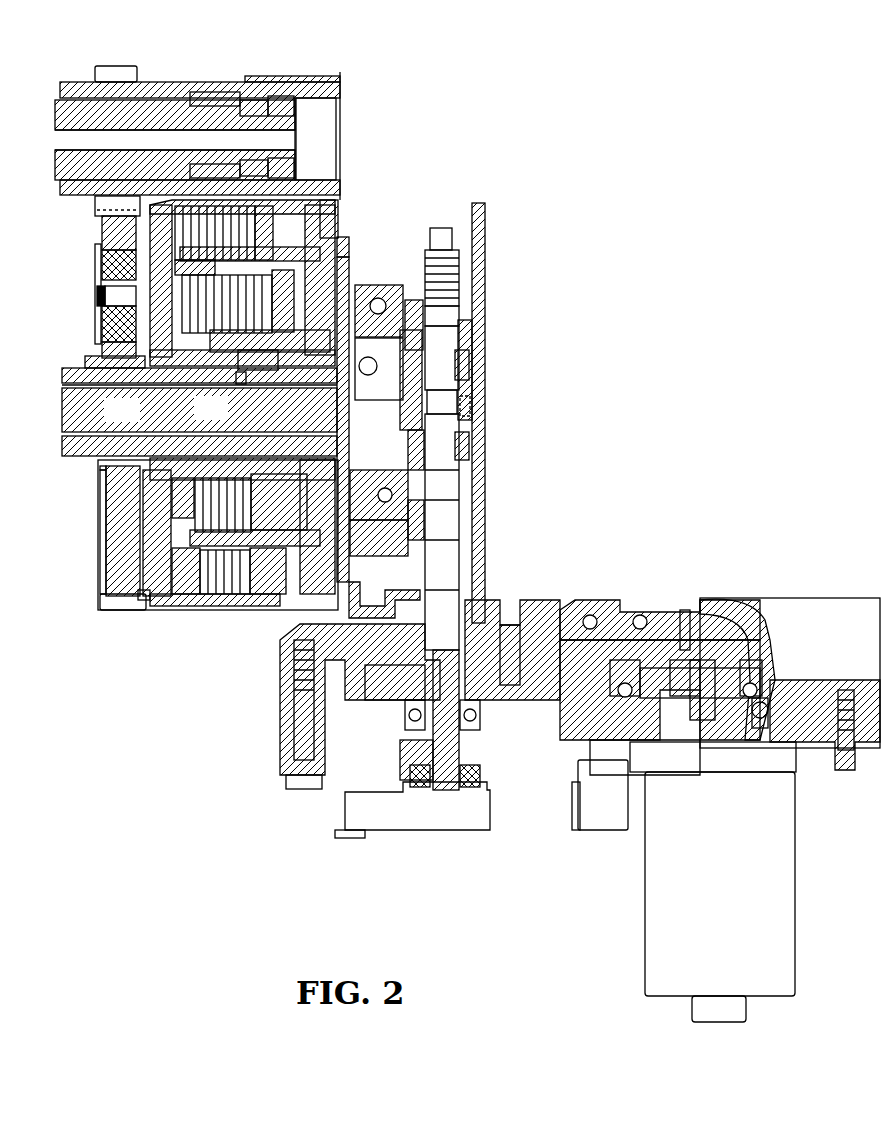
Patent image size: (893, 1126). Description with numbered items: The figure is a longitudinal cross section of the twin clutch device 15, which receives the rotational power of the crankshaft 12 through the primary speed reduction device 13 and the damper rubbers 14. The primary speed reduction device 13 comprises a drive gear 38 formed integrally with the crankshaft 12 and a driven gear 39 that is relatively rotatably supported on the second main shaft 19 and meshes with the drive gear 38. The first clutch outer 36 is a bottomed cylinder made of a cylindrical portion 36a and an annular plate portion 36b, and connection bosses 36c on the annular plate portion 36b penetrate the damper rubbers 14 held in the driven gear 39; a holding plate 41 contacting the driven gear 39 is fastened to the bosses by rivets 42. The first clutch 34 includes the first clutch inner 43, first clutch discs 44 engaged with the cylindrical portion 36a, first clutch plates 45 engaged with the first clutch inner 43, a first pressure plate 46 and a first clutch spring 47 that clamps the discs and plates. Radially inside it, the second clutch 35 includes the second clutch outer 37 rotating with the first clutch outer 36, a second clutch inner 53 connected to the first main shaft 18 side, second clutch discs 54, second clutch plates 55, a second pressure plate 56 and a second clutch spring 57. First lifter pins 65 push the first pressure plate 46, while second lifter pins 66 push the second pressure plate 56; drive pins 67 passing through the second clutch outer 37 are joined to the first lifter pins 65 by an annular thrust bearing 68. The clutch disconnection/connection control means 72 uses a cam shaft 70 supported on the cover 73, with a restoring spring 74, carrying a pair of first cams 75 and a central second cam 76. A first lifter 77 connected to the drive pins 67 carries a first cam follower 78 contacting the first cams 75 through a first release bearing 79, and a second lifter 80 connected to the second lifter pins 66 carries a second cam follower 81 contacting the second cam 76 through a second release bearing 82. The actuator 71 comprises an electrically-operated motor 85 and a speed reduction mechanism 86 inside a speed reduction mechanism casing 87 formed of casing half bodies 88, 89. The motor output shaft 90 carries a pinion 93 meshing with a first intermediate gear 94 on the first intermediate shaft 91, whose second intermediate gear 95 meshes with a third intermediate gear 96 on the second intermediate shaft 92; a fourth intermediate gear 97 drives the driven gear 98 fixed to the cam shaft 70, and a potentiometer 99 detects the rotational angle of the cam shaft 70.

The crankshaft 12 is at (155, 100).
The primary speed reduction device 13 is at (145, 72).
The damper rubber 14 is at (118, 248).
The twin clutch device 15 is at (446, 97).
The first main shaft 18 is at (82, 364).
The second main shaft 19 is at (137, 422).
The first clutch 34 is at (290, 162).
The second clutch 35 is at (334, 238).
The first clutch outer 36 is at (184, 610).
The cylindrical portion 36a is at (198, 606).
The annular plate portion 36b is at (104, 574).
The connection bosses 36c is at (100, 314).
The second clutch outer 37 is at (336, 548).
The drive gear 38 is at (115, 66).
The driven gear 39 is at (112, 610).
The holding plate 41 is at (105, 538).
The rivets 42 is at (100, 292).
The first clutch inner 43 is at (158, 516).
The first clutch discs 44 is at (240, 606).
The first clutch plates 45 is at (233, 594).
The first pressure plate 46 is at (138, 604).
The first clutch spring 47 is at (160, 600).
The second clutch inner 53 is at (282, 470).
The second clutch discs 54 is at (350, 268).
The second clutch plates 55 is at (242, 285).
The second pressure plate 56 is at (148, 478).
The second clutch spring 57 is at (165, 512).
The first lifter pins 65 is at (266, 594).
The second lifter pins 66 is at (236, 420).
The drive pins 67 is at (345, 560).
The thrust bearing 68 is at (320, 582).
The cam shaft 70 is at (456, 510).
The actuator 71 is at (520, 865).
The clutch disconnection/connection control means 72 is at (488, 352).
The cover 73 is at (486, 222).
The restoring spring 74 is at (458, 268).
The first cams 75 is at (470, 362).
The second cam 76 is at (466, 398).
The first lifter 77 is at (345, 250).
The first cam follower 78 is at (425, 330).
The first release bearing 79 is at (428, 296).
The second lifter 80 is at (456, 494).
The second cam follower 81 is at (458, 408).
The second release bearing 82 is at (462, 468).
The electrically-operated motor 85 is at (660, 858).
The speed reduction mechanism 86 is at (528, 800).
The speed reduction mechanism casing 87 is at (822, 584).
The casing half body 88 is at (778, 680).
The casing half body 89 is at (745, 604).
The output shaft 90 is at (714, 738).
The first intermediate shaft 91 is at (660, 612).
The second intermediate shaft 92 is at (580, 600).
The pinion 93 is at (758, 738).
The first intermediate gear 94 is at (692, 662).
The second intermediate gear 95 is at (688, 625).
The third intermediate gear 96 is at (520, 625).
The fourth intermediate gear 97 is at (640, 698).
The driven gear 98 is at (360, 700).
The potentiometer 99 is at (447, 830).